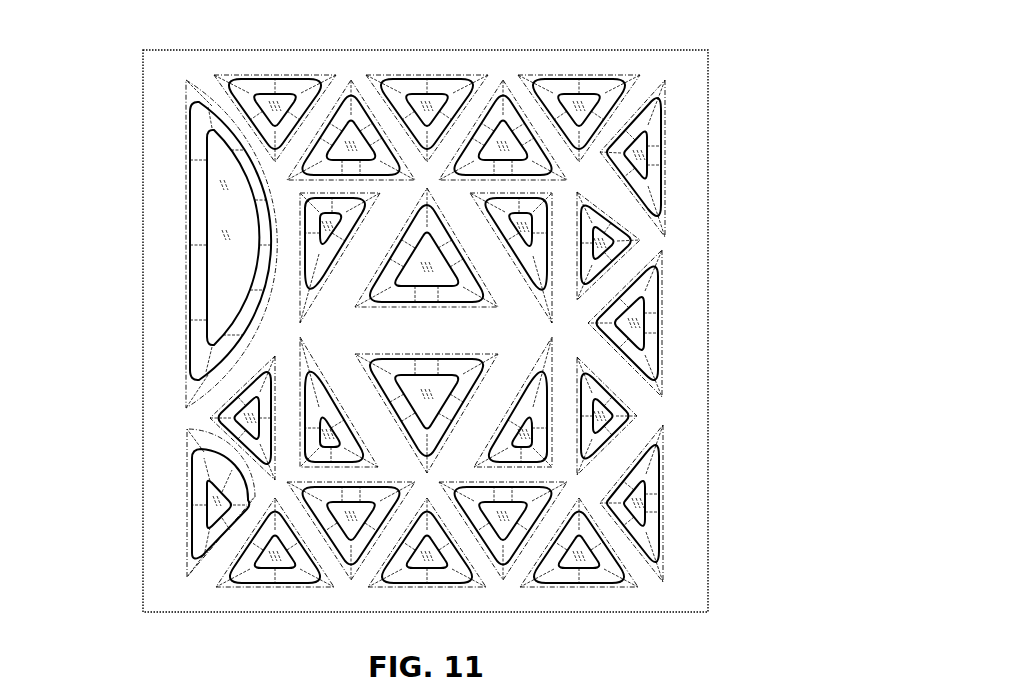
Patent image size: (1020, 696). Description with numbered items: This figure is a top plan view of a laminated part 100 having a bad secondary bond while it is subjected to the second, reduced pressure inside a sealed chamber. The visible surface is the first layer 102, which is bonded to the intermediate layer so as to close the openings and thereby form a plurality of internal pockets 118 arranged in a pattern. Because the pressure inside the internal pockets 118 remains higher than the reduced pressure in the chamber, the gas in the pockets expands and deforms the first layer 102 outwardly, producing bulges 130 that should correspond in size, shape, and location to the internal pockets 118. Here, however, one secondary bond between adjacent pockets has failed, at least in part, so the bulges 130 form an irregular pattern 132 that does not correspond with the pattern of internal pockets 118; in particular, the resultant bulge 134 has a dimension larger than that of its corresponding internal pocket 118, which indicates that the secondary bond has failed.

The laminated part 100 is at (745, 52).
The first layer 102 is at (581, 59).
The internal pockets 118 is at (270, 76).
The bulges 130 is at (345, 138).
The irregular pattern 132 is at (174, 106).
The bulge 134 is at (230, 237).